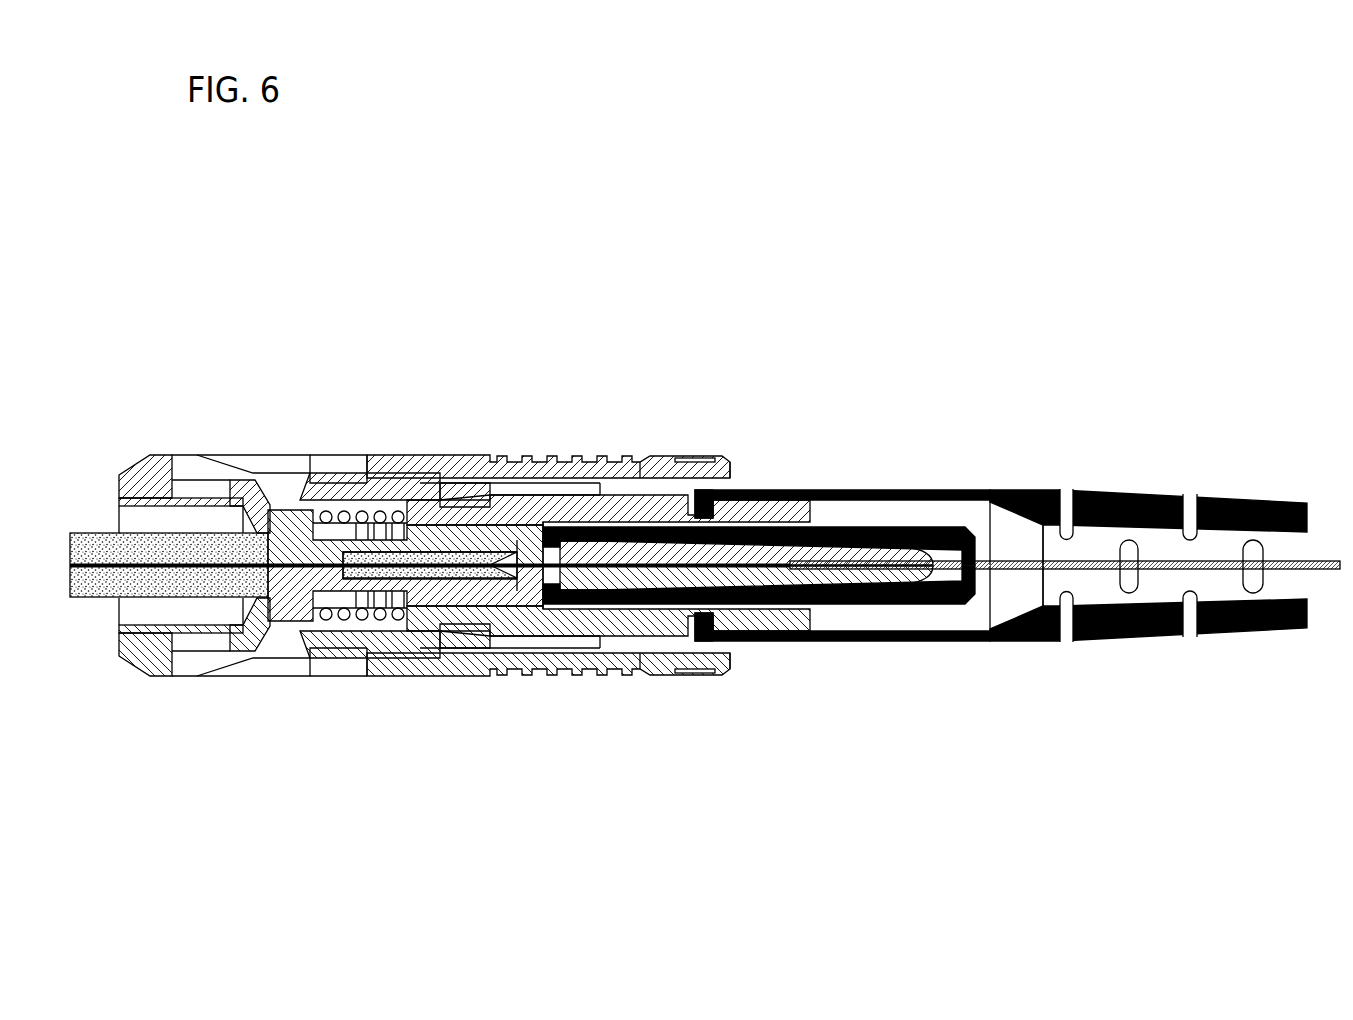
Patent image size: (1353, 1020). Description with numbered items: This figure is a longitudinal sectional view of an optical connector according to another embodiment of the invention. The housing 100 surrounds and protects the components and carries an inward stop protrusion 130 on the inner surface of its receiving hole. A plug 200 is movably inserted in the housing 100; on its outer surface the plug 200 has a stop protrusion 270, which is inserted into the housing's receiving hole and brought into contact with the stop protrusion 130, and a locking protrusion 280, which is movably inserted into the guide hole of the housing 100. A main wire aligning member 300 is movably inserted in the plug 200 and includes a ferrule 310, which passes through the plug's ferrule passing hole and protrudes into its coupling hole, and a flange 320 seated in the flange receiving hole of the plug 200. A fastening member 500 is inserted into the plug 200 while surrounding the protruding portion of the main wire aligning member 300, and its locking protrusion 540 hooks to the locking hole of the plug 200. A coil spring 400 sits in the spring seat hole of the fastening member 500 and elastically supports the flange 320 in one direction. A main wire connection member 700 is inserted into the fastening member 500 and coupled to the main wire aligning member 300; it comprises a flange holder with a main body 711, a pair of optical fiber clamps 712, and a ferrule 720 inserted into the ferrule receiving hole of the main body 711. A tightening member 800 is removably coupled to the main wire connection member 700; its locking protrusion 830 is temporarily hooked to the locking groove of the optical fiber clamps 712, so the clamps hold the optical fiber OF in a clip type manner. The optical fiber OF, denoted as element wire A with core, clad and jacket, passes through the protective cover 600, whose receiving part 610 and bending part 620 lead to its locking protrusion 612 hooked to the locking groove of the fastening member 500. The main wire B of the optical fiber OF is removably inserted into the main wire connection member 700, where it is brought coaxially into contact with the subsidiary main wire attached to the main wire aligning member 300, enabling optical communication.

The main wire B is at (110, 555).
The stop protrusion 130 is at (172, 480).
The ferrule 310 is at (183, 580).
The stop protrusion 270 is at (290, 650).
The main wire aligning member 300 is at (293, 500).
The locking protrusion 280 is at (352, 475).
The locking protrusion 540 is at (455, 485).
The housing 100 is at (572, 455).
The plug 200 is at (300, 625).
The flange 320 is at (362, 620).
The spring 400 is at (392, 600).
The ferrule 720 is at (460, 620).
The main body 711 is at (540, 625).
The locking protrusion 830 is at (578, 605).
The tightening member 800 is at (883, 607).
The main wire connection member 700 is at (548, 523).
The optical fiber clamps 712 is at (865, 530).
The fastening member 500 is at (668, 635).
The locking protrusion 612 is at (735, 630).
The receiving part 610 is at (938, 500).
The protective cover 600 is at (1047, 487).
The bending part 620 is at (1127, 640).
The element wire A is at (1000, 643).
The optical fiber OF is at (1165, 557).